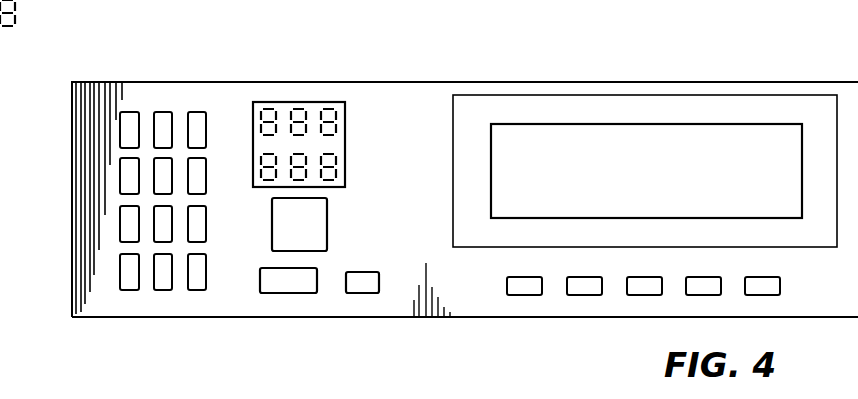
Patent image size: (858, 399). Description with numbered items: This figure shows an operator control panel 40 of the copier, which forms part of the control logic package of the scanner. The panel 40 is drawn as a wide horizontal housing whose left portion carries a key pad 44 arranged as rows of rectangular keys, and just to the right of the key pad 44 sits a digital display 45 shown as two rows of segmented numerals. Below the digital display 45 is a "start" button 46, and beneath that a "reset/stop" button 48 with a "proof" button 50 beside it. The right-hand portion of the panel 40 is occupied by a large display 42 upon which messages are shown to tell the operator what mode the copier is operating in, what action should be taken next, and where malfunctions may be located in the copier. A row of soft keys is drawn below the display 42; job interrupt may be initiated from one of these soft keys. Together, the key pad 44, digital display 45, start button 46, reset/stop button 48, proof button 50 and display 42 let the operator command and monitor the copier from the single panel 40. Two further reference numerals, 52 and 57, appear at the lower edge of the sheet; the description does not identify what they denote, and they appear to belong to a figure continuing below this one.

The operator control panel 40 is at (466, 70).
The display 42 is at (624, 138).
The key pad 44 is at (141, 101).
The digital display 45 is at (244, 120).
The start button 46 is at (327, 204).
The reset/stop button 48 is at (293, 293).
The proof button 50 is at (367, 293).
The housing 52 is at (215, 398).
The component 57 is at (107, 391).